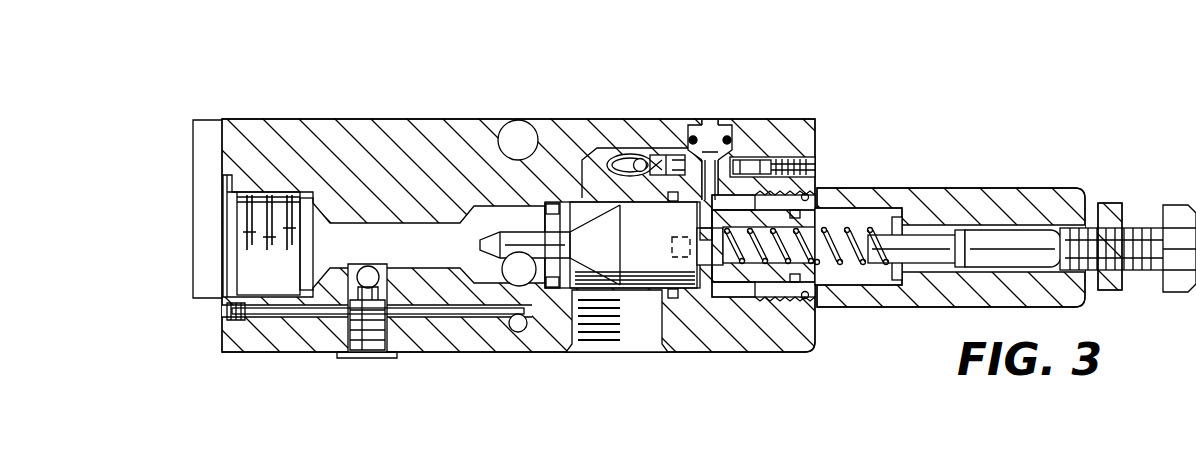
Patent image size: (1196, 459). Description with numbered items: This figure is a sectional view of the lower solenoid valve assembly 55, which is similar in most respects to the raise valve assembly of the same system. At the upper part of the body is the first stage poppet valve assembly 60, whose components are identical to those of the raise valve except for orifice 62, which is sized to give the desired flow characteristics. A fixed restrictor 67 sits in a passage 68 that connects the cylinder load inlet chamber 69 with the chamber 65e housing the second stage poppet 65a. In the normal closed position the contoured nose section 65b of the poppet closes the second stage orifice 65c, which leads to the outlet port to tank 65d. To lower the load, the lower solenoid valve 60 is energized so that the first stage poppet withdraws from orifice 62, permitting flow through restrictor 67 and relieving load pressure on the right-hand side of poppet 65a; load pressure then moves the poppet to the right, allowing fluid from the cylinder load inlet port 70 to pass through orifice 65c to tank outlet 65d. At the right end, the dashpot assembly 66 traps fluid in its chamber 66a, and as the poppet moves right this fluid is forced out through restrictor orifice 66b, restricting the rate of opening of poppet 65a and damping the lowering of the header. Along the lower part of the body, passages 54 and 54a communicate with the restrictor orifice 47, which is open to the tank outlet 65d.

The restrictor orifice 47 is at (383, 275).
The passage 54 is at (514, 331).
The passage 54a is at (423, 316).
The lower solenoid valve assembly 55 is at (1000, 130).
The first stage poppet valve assembly 60 is at (803, 123).
The orifice 62 is at (711, 122).
The second stage poppet 65a is at (643, 278).
The contoured nose section 65b is at (490, 247).
The second stage orifice 65c is at (550, 290).
The outlet port to tank 65d is at (250, 268).
The chamber 65e is at (707, 284).
The dashpot assembly 66 is at (915, 190).
The chamber of dashpot 66a is at (845, 215).
The restrictor orifice 66b is at (700, 226).
The fixed restrictor 67 is at (658, 160).
The passage 68 is at (623, 160).
The cylinder load inlet chamber 69 is at (583, 172).
The cylinder load inlet port 70 is at (605, 353).